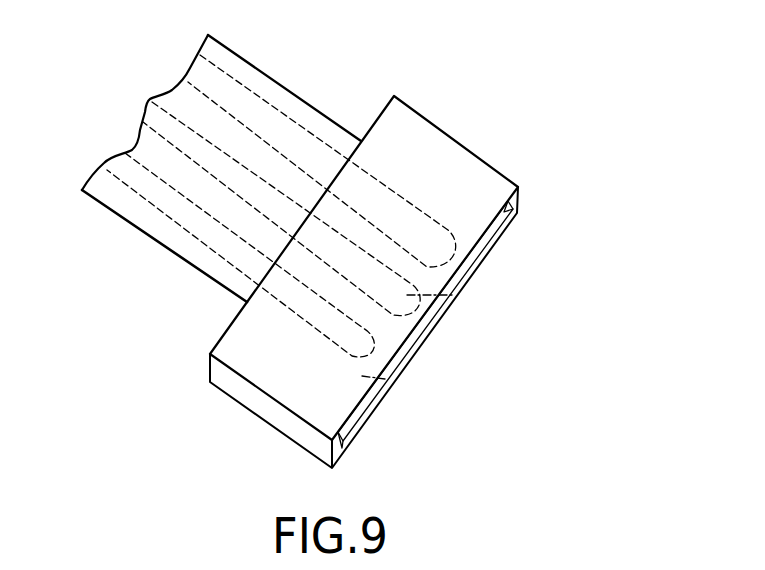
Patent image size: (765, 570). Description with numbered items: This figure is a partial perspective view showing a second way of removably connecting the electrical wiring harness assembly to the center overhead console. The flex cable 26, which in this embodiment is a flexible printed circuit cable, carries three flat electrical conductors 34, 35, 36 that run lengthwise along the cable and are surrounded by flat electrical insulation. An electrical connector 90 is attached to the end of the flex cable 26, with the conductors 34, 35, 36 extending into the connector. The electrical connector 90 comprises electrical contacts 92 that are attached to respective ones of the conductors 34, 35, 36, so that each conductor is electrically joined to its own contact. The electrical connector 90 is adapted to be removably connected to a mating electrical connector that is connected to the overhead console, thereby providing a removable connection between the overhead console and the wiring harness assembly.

The flex cable 26 is at (258, 70).
The flat electrical conductor 34 is at (186, 68).
The flat electrical conductor 35 is at (151, 100).
The flat electrical conductor 36 is at (110, 158).
The electrical connector 90 is at (214, 347).
The electrical contacts 92 is at (455, 295).